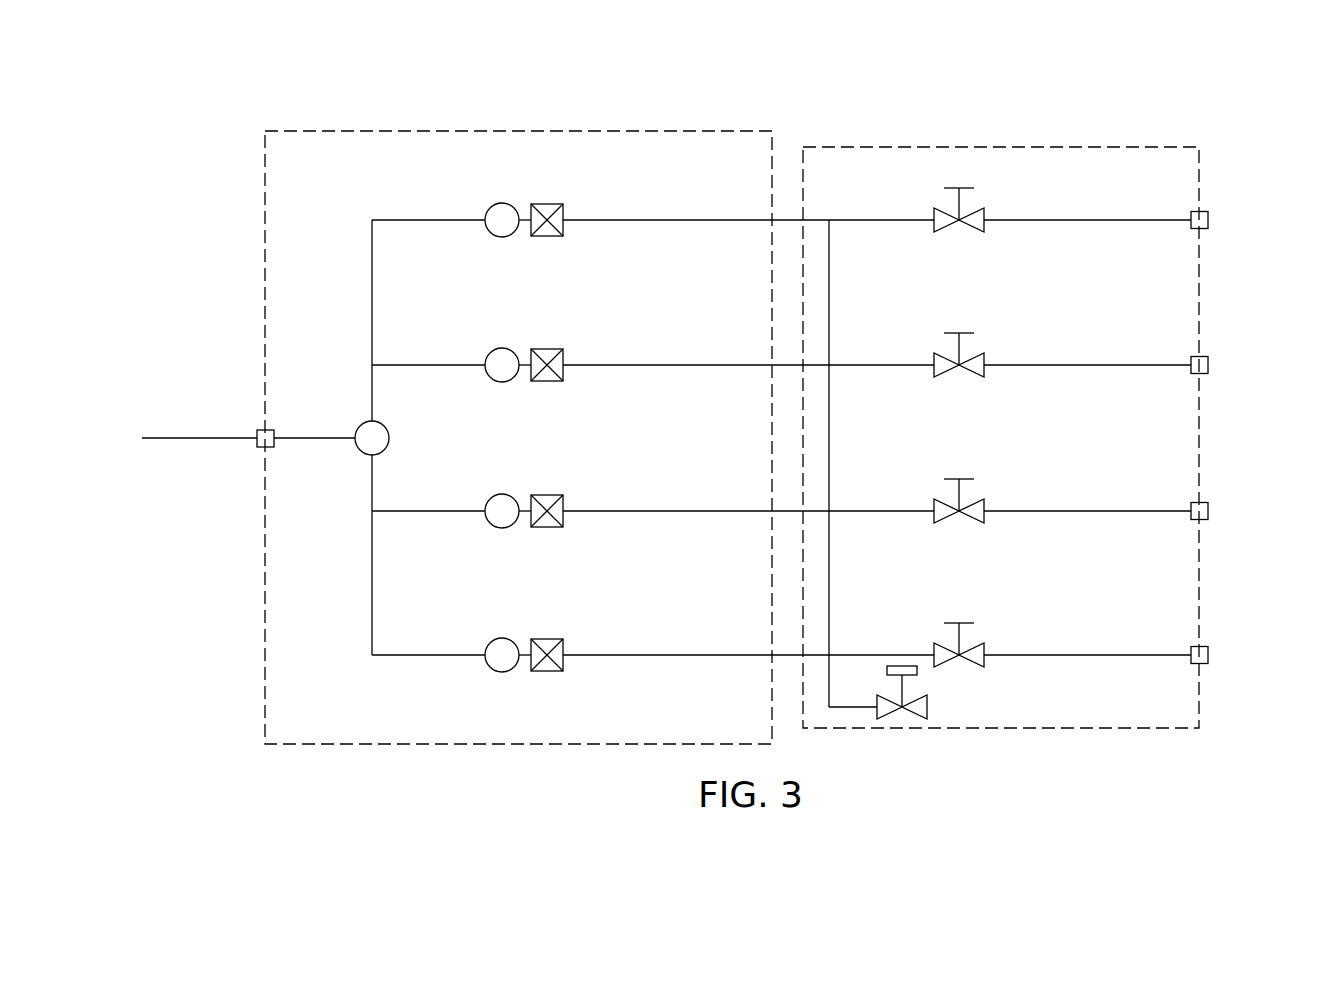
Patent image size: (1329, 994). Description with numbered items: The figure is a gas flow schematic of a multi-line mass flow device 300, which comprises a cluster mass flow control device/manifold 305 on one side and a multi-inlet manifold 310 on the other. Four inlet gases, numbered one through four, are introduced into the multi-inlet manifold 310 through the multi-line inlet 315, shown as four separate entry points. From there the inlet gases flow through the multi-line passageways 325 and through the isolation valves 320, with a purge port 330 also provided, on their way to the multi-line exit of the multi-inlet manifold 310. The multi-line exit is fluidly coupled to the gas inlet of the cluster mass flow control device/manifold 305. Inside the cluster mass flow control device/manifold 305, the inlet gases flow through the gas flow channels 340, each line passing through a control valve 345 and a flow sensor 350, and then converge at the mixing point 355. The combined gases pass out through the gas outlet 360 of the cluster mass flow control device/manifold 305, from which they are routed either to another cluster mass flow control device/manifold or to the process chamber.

The multi-line mass flow device 300 is at (722, 237).
The cluster mass flow control device/manifold 305 is at (690, 131).
The multi-inlet manifold 310 is at (1120, 147).
The multi-line inlet 315 is at (1191, 215).
The isolation valves 320 is at (934, 215).
The multi-line passageways 325 is at (1065, 220).
The purge port 330 is at (927, 706).
The gas flow channels 340 is at (372, 292).
The control valve 345 is at (552, 204).
The flow sensor 350 is at (502, 203).
The mixing point 355 is at (389, 436).
The gas outlet 360 is at (274, 430).